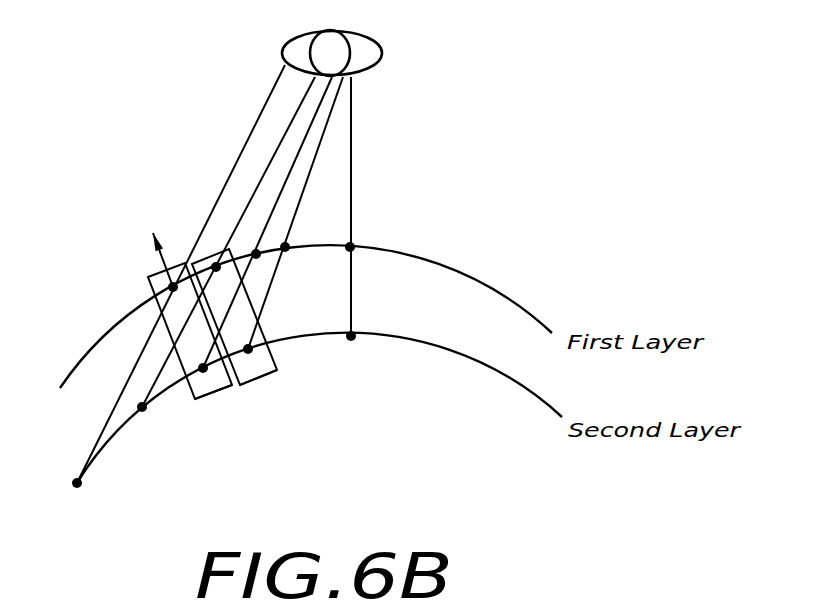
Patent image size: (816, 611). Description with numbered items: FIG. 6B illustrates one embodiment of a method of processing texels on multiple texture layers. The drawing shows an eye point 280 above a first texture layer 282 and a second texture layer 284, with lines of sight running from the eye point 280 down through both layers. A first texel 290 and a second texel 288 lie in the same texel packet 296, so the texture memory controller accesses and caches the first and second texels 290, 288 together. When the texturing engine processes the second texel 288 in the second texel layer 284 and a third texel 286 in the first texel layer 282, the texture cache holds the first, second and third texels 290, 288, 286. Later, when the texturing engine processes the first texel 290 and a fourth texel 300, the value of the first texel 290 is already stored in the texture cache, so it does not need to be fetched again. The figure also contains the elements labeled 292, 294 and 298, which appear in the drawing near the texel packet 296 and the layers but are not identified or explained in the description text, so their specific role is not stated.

The eye point 280 is at (365, 32).
The first texture layer 282 is at (458, 271).
The second texture layer 284 is at (440, 350).
The third texel 286 is at (290, 242).
The second texel 288 is at (252, 348).
The first texel 290 is at (206, 262).
The second gaze region / rectangle 292 is at (213, 392).
The surface normal arrow 294 is at (150, 288).
The texel packet 296 is at (270, 375).
The bottom of first rectangle 298 is at (205, 400).
The fourth texel 300 is at (147, 412).